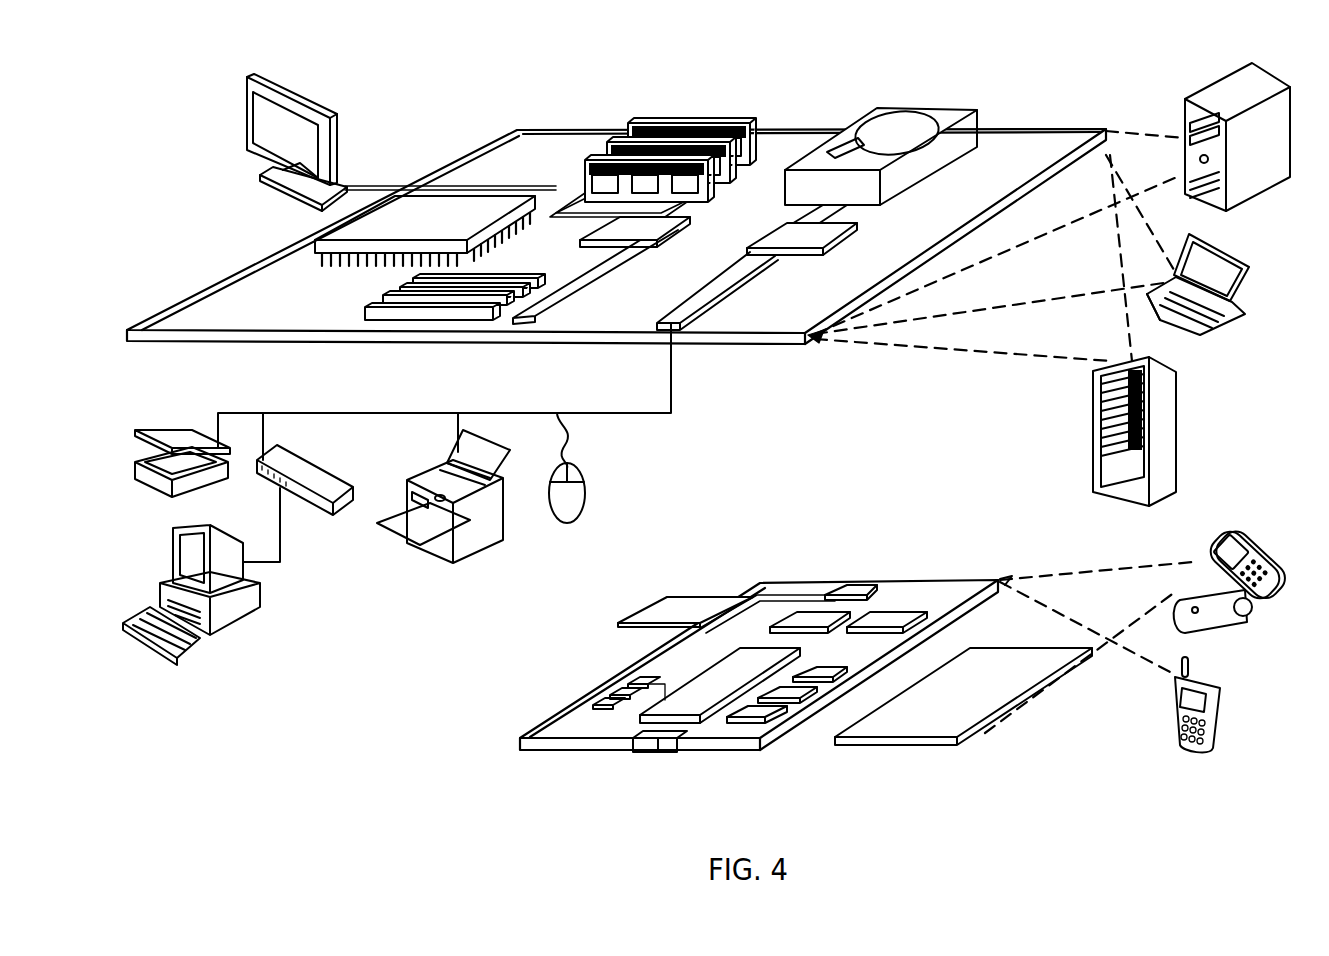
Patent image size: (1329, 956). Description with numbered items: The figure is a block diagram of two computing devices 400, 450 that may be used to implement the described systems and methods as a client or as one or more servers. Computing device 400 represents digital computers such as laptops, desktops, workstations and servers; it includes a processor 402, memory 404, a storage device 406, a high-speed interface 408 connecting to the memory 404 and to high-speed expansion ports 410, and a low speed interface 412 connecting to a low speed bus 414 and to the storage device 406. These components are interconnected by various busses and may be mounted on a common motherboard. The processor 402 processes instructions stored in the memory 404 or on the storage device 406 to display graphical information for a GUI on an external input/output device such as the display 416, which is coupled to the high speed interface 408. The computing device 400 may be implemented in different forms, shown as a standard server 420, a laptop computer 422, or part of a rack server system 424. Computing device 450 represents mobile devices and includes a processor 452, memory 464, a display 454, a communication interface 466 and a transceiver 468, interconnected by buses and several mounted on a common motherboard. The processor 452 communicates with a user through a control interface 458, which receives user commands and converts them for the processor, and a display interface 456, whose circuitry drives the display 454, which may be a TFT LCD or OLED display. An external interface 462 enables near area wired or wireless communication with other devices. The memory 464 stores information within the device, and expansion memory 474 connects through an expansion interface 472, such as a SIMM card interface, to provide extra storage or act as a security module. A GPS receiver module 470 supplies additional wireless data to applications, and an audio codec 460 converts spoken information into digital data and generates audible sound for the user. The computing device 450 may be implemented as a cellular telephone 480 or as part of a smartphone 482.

The computing device 400 is at (442, 104).
The processor 402 is at (320, 247).
The memory 404 is at (642, 120).
The storage device 406 is at (877, 108).
The high-speed interface 408 is at (612, 231).
The high-speed expansion ports 410 is at (387, 304).
The low speed interface 412 is at (784, 233).
The low speed bus 414 is at (686, 332).
The display 416 is at (254, 78).
The standard server 420 is at (1185, 116).
The laptop computer 422 is at (1250, 265).
The rack server system 424 is at (1093, 453).
The computing device 450 is at (498, 748).
The processor 452 is at (693, 710).
The display 454 is at (927, 723).
The display interface 456 is at (757, 713).
The control interface 458 is at (793, 690).
The audio codec 460 is at (820, 670).
The external interface 462 is at (657, 752).
The memory 464 is at (610, 697).
The communication interface 466 is at (810, 617).
The transceiver 468 is at (887, 617).
The GPS receiver module 470 is at (847, 585).
The expansion interface 472 is at (740, 592).
The expansion memory 474 is at (665, 593).
The cellular telephone 480 is at (1226, 536).
The smartphone 482 is at (1170, 713).